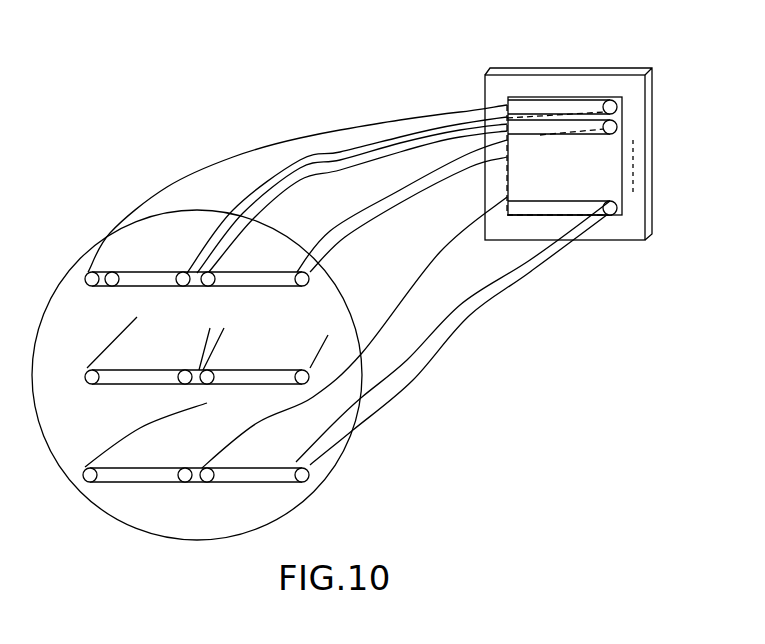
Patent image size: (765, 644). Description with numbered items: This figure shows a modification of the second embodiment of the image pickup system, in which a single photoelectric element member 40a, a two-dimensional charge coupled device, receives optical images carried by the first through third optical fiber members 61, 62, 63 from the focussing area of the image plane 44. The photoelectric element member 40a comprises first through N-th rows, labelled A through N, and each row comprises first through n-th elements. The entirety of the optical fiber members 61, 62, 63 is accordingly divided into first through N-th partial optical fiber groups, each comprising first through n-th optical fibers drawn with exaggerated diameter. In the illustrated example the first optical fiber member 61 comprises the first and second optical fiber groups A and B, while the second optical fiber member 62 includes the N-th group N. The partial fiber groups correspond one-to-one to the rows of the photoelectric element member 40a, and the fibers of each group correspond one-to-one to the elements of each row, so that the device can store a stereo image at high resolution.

The photoelectric element member 40a is at (608, 70).
The image plane 44 is at (77, 263).
The first optical fiber member 61 is at (357, 183).
The second optical fiber member 62 is at (247, 443).
The third optical fiber member 63 is at (243, 343).